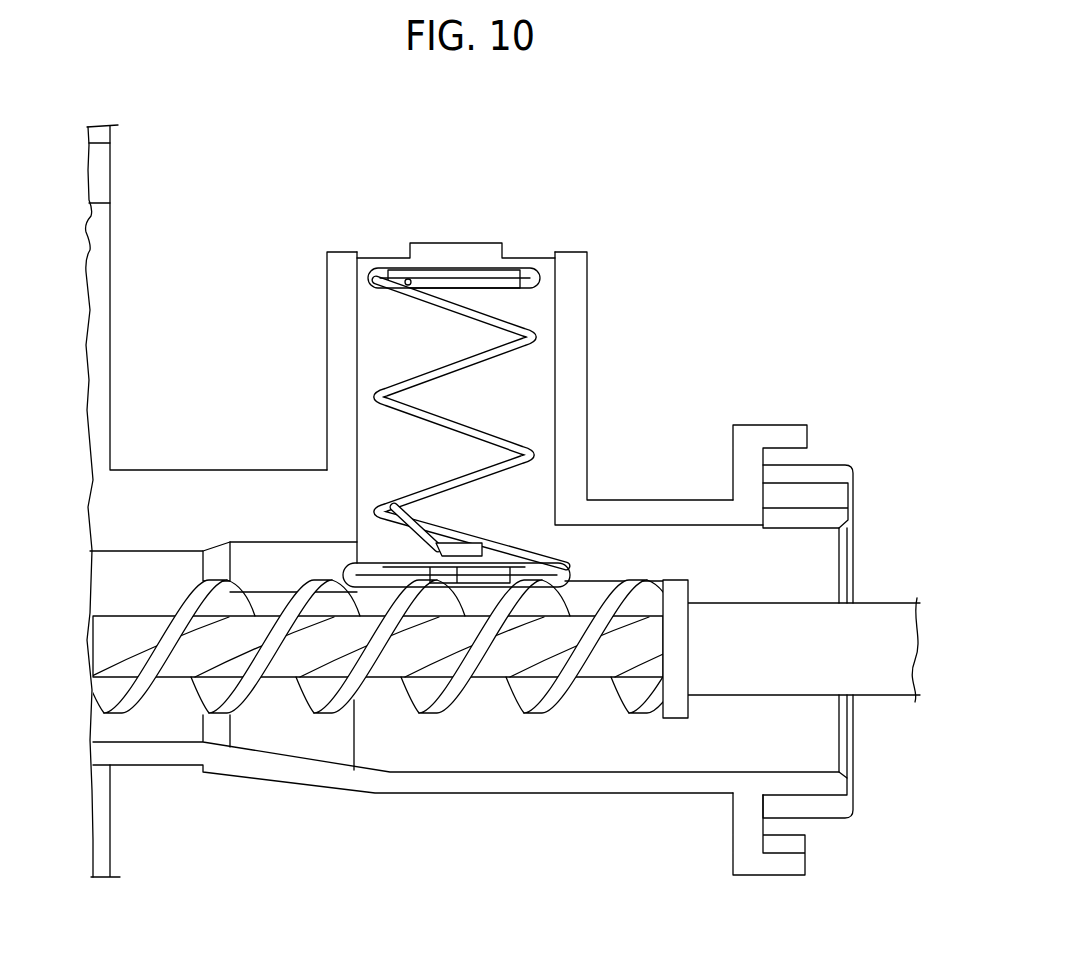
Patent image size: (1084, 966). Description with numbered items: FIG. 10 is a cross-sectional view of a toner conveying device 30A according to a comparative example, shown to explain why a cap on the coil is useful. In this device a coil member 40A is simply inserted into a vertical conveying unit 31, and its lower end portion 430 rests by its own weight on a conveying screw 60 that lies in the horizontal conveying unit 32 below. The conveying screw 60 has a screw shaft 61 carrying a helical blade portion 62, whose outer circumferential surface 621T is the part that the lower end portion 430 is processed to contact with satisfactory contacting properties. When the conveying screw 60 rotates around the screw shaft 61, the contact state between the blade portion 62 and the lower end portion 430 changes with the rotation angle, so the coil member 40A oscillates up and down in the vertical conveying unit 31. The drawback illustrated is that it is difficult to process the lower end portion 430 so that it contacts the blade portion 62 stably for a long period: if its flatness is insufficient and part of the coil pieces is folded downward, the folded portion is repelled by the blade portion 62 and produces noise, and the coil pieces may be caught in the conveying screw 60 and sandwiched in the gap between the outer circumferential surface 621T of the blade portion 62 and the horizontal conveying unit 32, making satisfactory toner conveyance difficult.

The toner conveying device 30A is at (688, 216).
The vertical conveying unit 31 is at (587, 314).
The horizontal conveying unit 32 is at (642, 783).
The coil member 40A is at (512, 427).
The lower end portion 430 is at (471, 575).
The conveying screw 60 is at (503, 750).
The screw shaft 61 is at (310, 653).
The blade portion 62 is at (420, 728).
The outer circumferential surface 621T is at (406, 618).